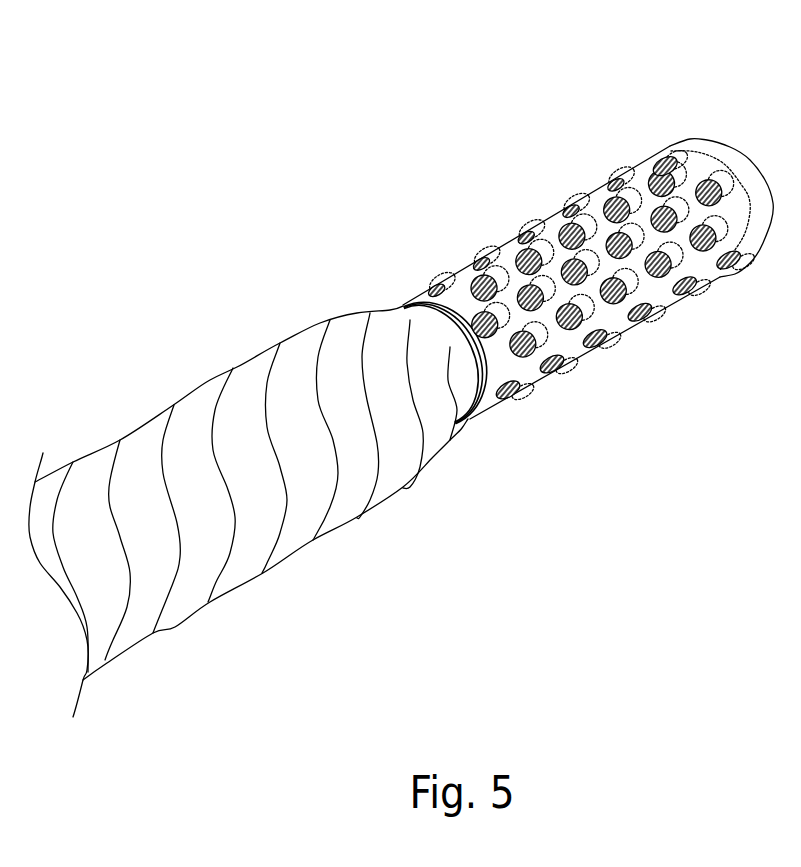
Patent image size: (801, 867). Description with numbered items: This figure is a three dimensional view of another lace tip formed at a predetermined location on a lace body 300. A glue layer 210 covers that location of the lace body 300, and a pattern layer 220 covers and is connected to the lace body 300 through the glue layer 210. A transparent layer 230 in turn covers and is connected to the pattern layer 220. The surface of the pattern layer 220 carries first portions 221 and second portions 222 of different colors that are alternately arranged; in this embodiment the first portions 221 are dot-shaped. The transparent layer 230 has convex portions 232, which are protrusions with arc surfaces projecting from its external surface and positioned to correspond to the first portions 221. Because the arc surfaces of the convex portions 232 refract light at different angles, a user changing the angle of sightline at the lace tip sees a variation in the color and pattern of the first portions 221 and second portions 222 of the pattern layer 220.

The lace body 300 is at (207, 405).
The glue layer 210 is at (402, 313).
The pattern layer 220 is at (415, 309).
The first portions 221 is at (518, 260).
The second portions 222 is at (513, 367).
The transparent layer 230 is at (647, 161).
The convex portions 232 is at (612, 177).